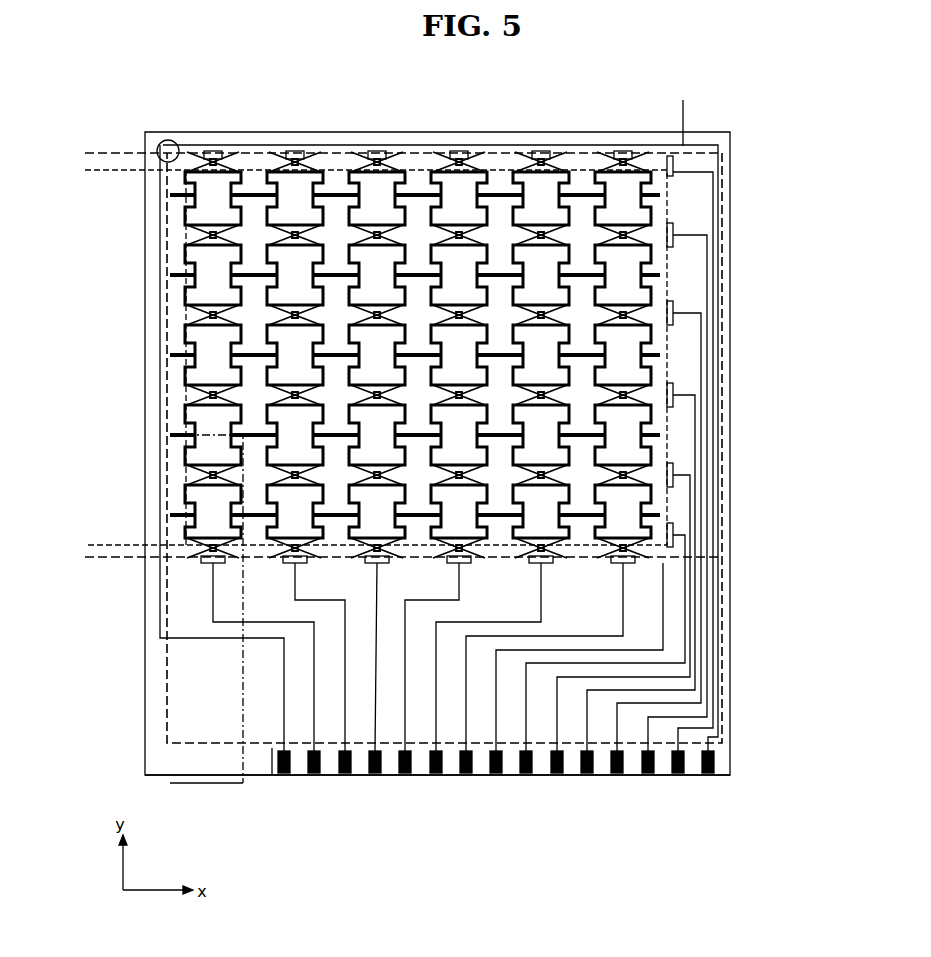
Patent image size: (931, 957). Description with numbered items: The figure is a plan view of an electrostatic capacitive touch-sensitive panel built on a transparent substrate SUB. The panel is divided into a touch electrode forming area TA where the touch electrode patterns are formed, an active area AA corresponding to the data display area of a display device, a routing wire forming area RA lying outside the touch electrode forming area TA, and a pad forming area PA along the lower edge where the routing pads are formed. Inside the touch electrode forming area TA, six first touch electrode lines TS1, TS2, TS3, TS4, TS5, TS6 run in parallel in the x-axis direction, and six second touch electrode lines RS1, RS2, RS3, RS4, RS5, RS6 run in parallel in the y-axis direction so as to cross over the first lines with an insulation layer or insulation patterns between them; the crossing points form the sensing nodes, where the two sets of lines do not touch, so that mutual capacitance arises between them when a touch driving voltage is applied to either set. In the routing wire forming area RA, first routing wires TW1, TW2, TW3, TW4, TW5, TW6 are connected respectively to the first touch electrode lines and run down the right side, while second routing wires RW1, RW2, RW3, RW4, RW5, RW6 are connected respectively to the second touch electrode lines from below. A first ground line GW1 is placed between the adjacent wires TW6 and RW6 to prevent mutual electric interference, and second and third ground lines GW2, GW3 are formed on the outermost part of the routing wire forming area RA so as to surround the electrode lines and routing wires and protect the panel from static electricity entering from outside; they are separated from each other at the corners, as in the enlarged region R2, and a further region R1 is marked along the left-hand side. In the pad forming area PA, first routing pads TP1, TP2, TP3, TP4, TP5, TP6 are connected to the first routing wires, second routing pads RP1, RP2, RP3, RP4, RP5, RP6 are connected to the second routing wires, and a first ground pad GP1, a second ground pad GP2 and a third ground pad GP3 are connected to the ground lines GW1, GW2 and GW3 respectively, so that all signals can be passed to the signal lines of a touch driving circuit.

The transparent substrate SUB is at (732, 762).
The touch electrode forming area TA is at (497, 100).
The active area AA is at (590, 115).
The routing wire forming area RA is at (683, 150).
The region R1 is at (207, 785).
The region R2 is at (168, 139).
The pad forming area PA is at (270, 760).
The second touch electrode line RS1 is at (213, 151).
The second touch electrode line RS2 is at (295, 151).
The second touch electrode line RS3 is at (377, 151).
The second touch electrode line RS4 is at (459, 151).
The second touch electrode line RS5 is at (541, 151).
The second touch electrode line RS6 is at (624, 151).
The first touch electrode line TS1 is at (186, 186).
The first touch electrode line TS2 is at (184, 233).
The first touch electrode line TS3 is at (184, 314).
The first touch electrode line TS4 is at (184, 394).
The first touch electrode line TS5 is at (180, 440).
The first touch electrode line TS6 is at (184, 522).
The second routing wire RW1 is at (213, 592).
The second routing wire RW2 is at (343, 610).
The second routing wire RW3 is at (375, 578).
The second routing wire RW4 is at (458, 578).
The second routing wire RW5 is at (542, 578).
The second routing wire RW6 is at (622, 578).
The first routing wire TW1 is at (713, 197).
The first routing wire TW2 is at (707, 290).
The first routing wire TW3 is at (701, 368).
The first routing wire TW4 is at (695, 447).
The first routing wire TW5 is at (690, 510).
The first routing wire TW6 is at (685, 575).
The first ground line GW1 is at (665, 622).
The second ground line GW2 is at (718, 668).
The third ground line GW3 is at (160, 612).
The first ground pad GP1 is at (496, 773).
The second ground pad GP2 is at (708, 773).
The third ground pad GP3 is at (284, 773).
The second routing pad RP1 is at (314, 773).
The second routing pad RP2 is at (345, 773).
The second routing pad RP3 is at (375, 773).
The second routing pad RP4 is at (405, 773).
The second routing pad RP5 is at (436, 773).
The second routing pad RP6 is at (466, 773).
The first routing pad TP1 is at (678, 773).
The first routing pad TP2 is at (648, 773).
The first routing pad TP3 is at (617, 773).
The first routing pad TP4 is at (587, 773).
The first routing pad TP5 is at (557, 773).
The first routing pad TP6 is at (526, 773).